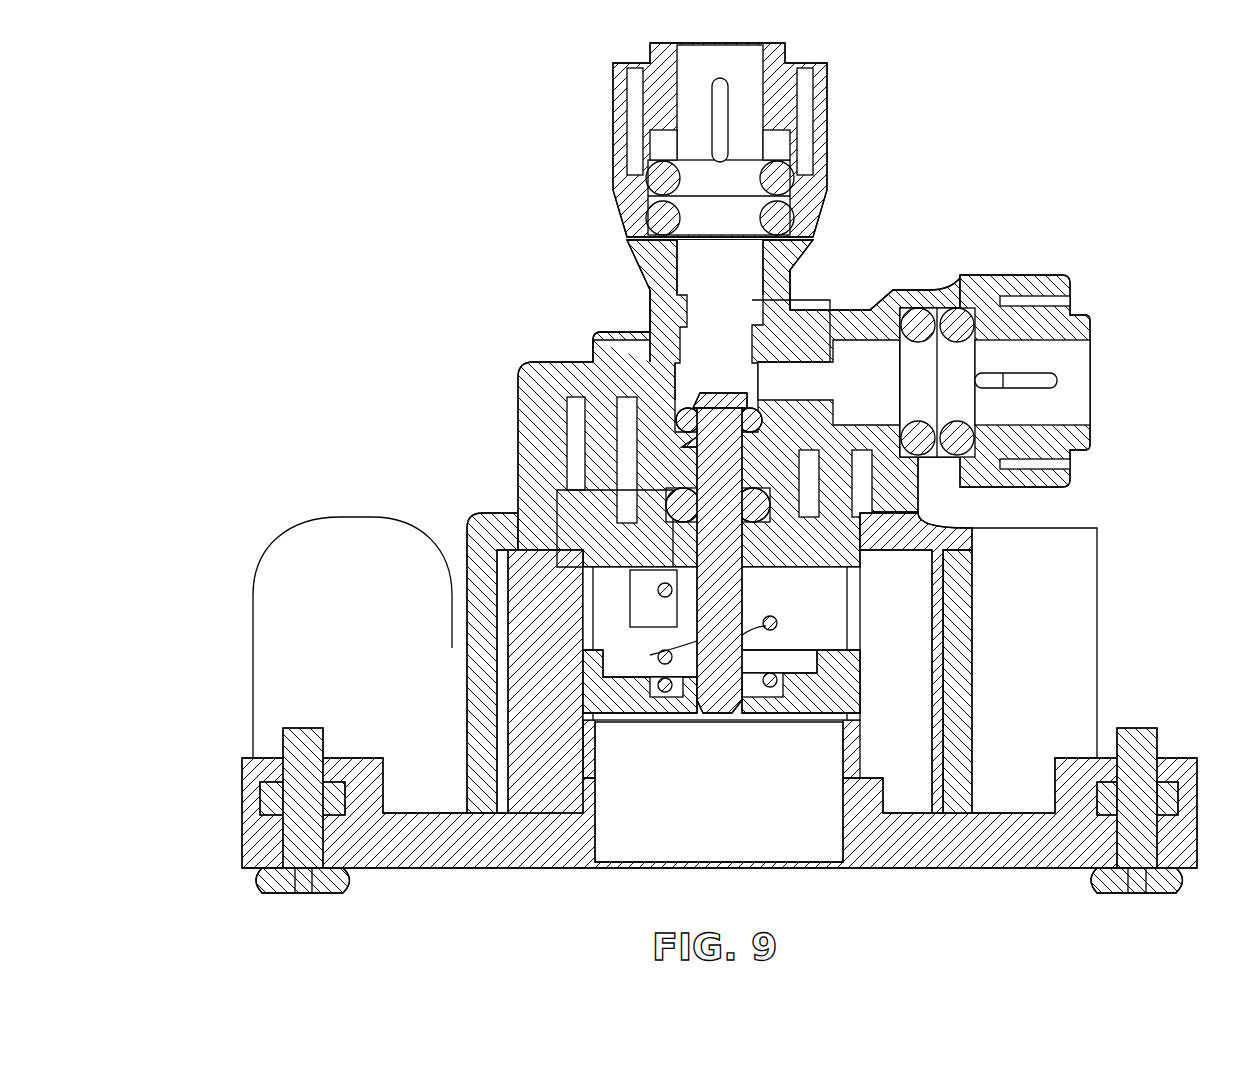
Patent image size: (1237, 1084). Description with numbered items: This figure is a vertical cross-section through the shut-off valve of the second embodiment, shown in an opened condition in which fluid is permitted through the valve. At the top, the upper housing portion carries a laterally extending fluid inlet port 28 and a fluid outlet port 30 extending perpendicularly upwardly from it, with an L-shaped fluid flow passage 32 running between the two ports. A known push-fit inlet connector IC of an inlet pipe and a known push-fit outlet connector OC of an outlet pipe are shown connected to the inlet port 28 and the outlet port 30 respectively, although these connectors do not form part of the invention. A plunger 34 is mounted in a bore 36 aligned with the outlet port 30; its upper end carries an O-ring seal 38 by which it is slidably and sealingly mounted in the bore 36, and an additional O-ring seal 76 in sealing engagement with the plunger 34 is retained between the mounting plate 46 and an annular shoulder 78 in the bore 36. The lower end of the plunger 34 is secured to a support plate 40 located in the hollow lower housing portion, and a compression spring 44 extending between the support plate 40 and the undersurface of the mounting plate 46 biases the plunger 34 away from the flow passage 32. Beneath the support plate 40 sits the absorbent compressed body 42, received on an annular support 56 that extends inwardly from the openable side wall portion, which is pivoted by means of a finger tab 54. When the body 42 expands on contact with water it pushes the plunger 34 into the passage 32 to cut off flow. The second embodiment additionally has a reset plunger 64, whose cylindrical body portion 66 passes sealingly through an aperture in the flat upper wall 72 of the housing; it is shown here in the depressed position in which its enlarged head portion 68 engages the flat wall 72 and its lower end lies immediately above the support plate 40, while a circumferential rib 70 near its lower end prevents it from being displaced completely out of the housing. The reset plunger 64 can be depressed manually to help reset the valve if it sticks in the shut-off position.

The push-fit outlet connector OC is at (842, 95).
The fluid outlet port 30 is at (614, 224).
The fluid inlet port 28 is at (926, 266).
The push-fit inlet connector IC is at (1032, 262).
The reset plunger 64 is at (627, 326).
The L-shaped fluid flow passage 32 is at (790, 300).
The flat upper wall 72 is at (545, 362).
The enlarged head portion 68 is at (607, 348).
The O-ring seal 38 is at (692, 408).
The bore 36 is at (737, 400).
The plunger 34 is at (735, 468).
The annular shoulder 78 is at (668, 492).
The additional O-ring seal 76 is at (655, 500).
The finger tab 54 is at (350, 516).
The mounting plate 46 is at (585, 562).
The cylindrical body portion 66 is at (466, 648).
The circumferential rib 70 is at (583, 622).
The support plate 40 is at (583, 695).
The compression spring 44 is at (770, 617).
The absorbent compressed body 42 is at (733, 806).
The annular support 56 is at (858, 866).